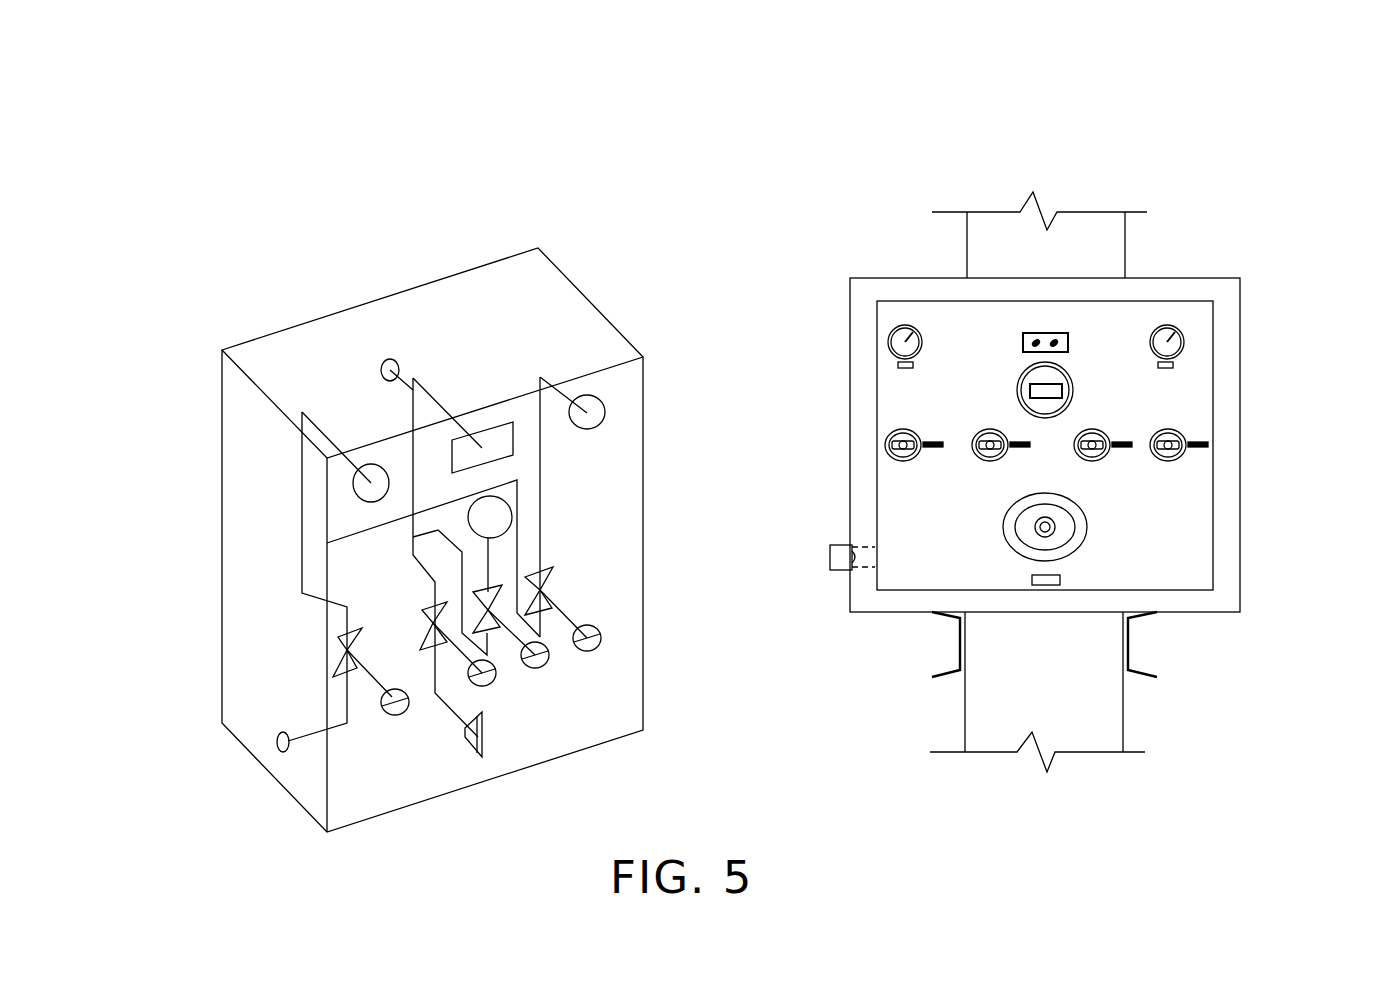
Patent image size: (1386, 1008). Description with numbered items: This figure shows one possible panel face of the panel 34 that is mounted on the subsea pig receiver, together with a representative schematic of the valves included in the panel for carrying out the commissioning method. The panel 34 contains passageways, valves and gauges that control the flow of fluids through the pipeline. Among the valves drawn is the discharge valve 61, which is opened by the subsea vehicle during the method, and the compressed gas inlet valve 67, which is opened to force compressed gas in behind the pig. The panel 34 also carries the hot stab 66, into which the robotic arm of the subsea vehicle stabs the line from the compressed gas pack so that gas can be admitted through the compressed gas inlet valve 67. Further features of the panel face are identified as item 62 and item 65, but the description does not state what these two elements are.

The panel 34 is at (792, 479).
The discharge valve 61 is at (515, 535).
The switch 62 is at (537, 712).
The vent hole 65 is at (327, 308).
The hot stab 66 is at (879, 661).
The compressed gas inlet valve 67 is at (559, 478).